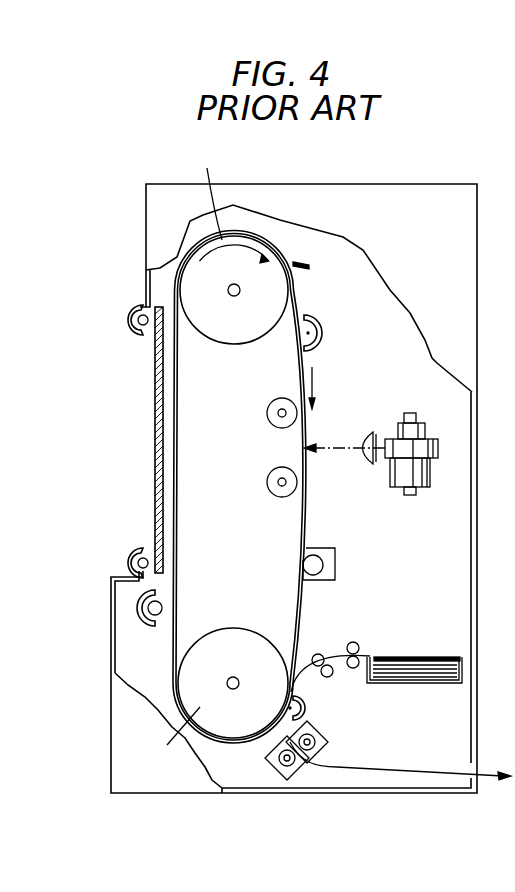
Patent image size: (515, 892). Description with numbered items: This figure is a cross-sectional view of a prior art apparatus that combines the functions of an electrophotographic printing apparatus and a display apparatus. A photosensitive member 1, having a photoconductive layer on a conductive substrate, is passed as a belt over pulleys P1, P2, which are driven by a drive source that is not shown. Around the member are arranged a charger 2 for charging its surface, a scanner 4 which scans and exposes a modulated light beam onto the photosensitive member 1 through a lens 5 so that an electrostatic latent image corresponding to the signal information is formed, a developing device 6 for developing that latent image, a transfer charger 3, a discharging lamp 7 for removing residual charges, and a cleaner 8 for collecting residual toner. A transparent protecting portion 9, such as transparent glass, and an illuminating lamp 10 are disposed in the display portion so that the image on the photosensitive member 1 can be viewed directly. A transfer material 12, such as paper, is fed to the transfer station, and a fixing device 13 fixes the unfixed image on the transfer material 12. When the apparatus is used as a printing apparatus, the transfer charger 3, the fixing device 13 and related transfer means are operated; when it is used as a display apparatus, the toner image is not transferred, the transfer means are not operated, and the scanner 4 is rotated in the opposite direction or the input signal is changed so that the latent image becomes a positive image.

The photosensitive member 1 is at (301, 298).
The charger 2 is at (322, 338).
The transfer charger 3 is at (305, 706).
The scanner 4 is at (421, 488).
The lens 5 is at (370, 430).
The developing device 6 is at (337, 561).
The discharging lamp 7 is at (137, 612).
The cleaner 8 is at (304, 262).
The transparent protecting portion 9 is at (155, 445).
The illuminating lamp 10 is at (134, 333).
The transfer material 12 is at (415, 657).
The fixing device 13 is at (328, 737).
The pulley P1 is at (207, 191).
The pulley P2 is at (169, 735).